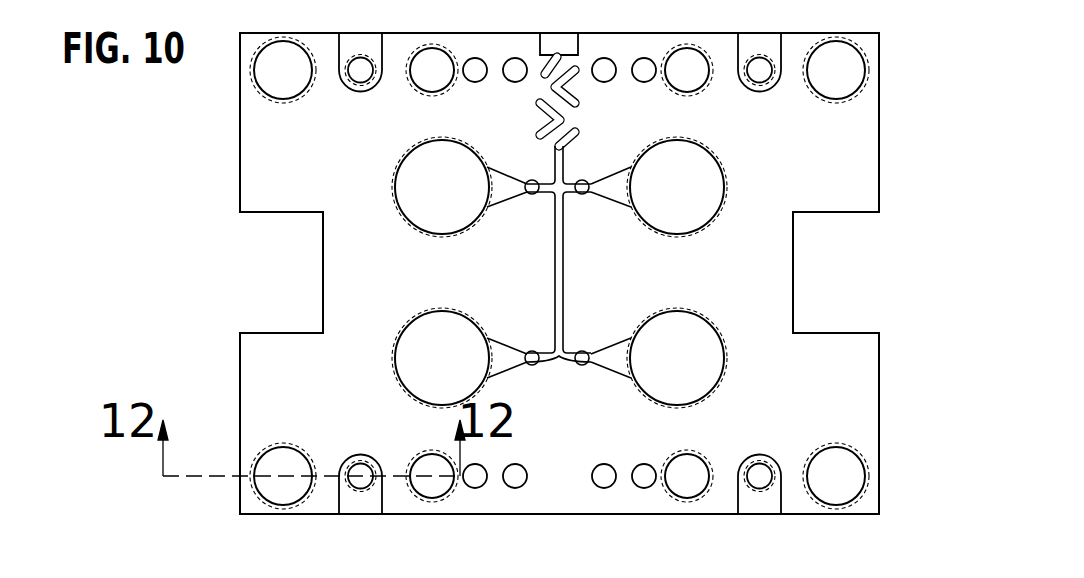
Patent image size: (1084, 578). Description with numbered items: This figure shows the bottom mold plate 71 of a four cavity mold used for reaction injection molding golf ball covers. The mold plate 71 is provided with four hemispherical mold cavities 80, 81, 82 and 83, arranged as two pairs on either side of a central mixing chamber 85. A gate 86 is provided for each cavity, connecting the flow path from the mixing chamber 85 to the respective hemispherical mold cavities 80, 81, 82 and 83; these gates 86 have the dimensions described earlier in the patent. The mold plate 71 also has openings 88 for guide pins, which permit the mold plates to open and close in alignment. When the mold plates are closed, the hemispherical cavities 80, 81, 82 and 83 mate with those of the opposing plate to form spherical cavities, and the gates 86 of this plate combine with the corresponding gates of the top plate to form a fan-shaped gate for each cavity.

The mold plate 71 is at (866, 135).
The hemispherical mold cavity 80 is at (716, 184).
The hemispherical mold cavity 81 is at (717, 357).
The hemispherical mold cavity 82 is at (397, 357).
The hemispherical mold cavity 83 is at (397, 186).
The mixing chamber 85 is at (537, 101).
The gate 86 is at (508, 202).
The opening 88 is at (262, 470).